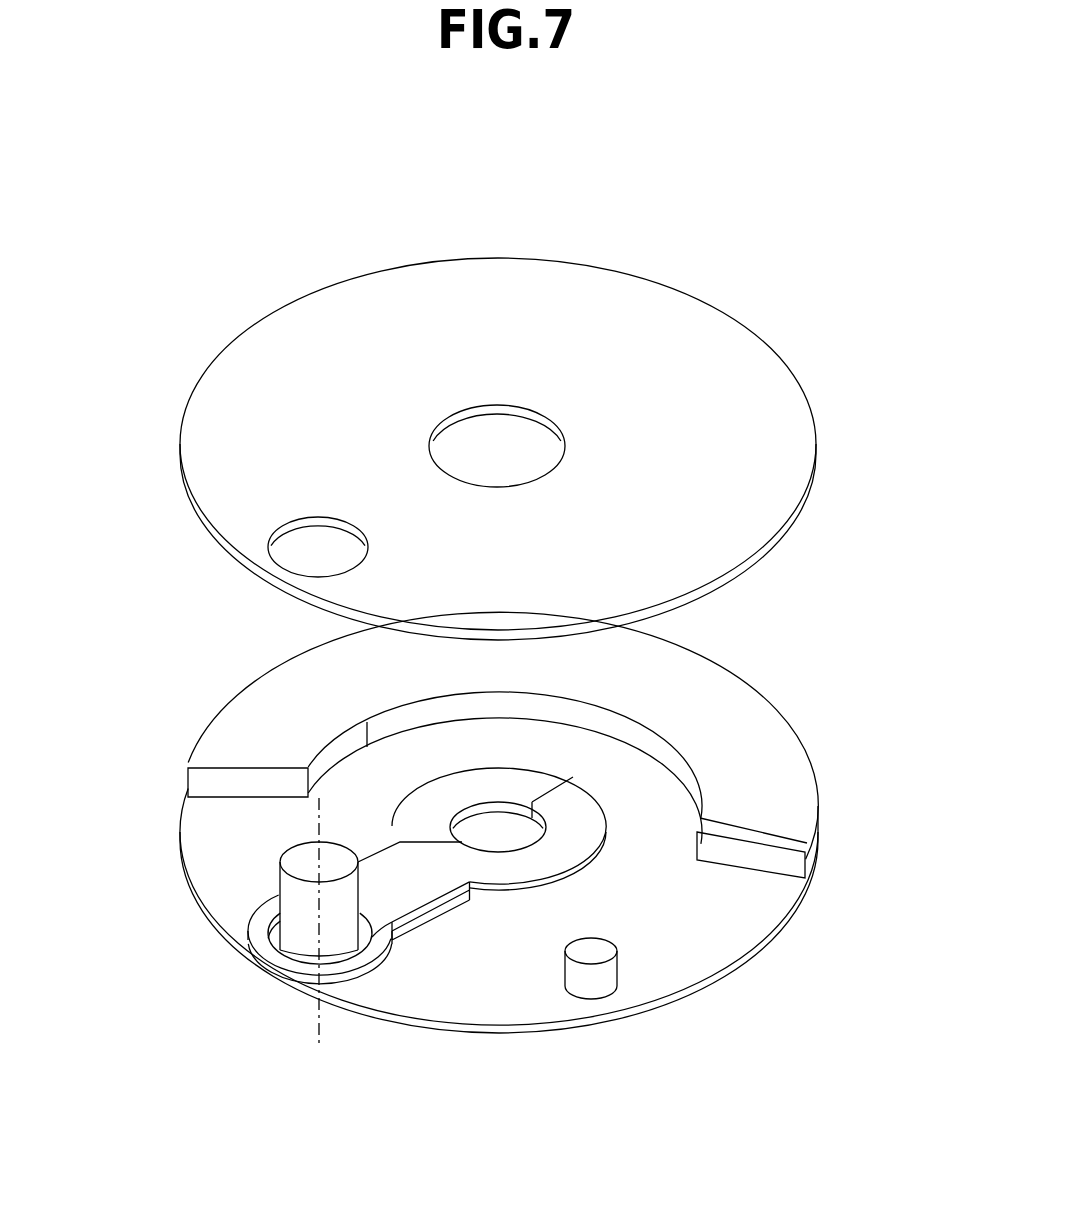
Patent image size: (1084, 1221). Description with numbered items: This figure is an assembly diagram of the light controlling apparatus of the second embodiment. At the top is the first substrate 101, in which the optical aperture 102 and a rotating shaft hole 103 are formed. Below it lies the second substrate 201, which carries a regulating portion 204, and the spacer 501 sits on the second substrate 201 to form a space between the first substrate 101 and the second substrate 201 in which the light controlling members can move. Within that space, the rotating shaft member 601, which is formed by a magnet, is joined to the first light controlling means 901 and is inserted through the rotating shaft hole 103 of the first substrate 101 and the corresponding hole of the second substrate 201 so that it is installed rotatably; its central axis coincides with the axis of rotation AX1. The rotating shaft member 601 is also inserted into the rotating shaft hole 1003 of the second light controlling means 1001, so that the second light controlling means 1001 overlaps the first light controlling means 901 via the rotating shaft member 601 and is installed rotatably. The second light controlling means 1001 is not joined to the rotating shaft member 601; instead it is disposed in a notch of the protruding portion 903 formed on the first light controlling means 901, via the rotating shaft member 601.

The first substrate 101 is at (755, 428).
The optical aperture 102 is at (549, 463).
The rotating shaft hole 103 is at (305, 565).
The second substrate 201 is at (703, 910).
The regulating portion 204 is at (588, 948).
The spacer 501 is at (748, 760).
The rotating shaft member 601 is at (303, 868).
The first light controlling means 901 is at (445, 795).
The protruding portion 903 is at (263, 952).
The second light controlling means 1001 is at (578, 823).
The rotating shaft hole 1003 is at (370, 937).
The axis of rotation AX1 is at (318, 1013).